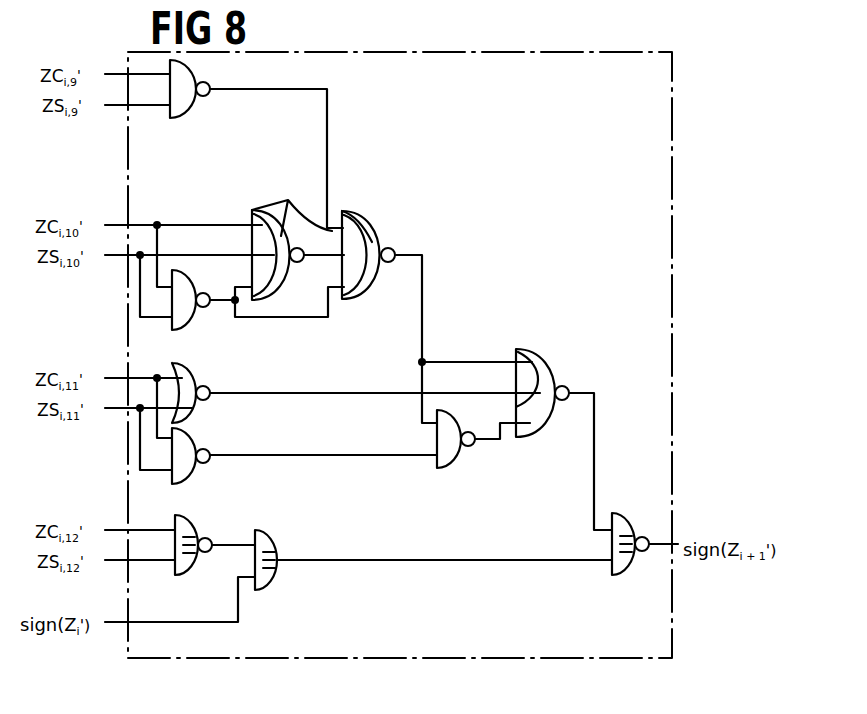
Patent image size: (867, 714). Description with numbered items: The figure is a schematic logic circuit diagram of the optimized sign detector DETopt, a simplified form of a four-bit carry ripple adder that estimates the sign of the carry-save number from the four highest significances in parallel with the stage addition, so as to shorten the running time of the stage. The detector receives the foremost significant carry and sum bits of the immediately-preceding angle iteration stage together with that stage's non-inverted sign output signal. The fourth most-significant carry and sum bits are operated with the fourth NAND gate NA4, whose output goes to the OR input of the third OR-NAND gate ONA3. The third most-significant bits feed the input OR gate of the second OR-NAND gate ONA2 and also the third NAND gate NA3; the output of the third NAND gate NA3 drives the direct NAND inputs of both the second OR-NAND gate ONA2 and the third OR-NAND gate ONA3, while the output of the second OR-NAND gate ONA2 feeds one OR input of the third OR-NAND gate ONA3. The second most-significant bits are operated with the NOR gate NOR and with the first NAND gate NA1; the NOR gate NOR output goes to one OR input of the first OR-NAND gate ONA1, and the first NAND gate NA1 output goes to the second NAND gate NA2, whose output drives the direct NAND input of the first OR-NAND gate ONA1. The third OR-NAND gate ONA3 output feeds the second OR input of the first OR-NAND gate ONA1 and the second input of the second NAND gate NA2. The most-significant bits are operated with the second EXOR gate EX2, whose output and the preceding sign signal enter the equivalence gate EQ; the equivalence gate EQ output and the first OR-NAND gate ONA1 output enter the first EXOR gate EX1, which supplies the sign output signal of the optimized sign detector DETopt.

The fourth NAND gate NA4 is at (189, 101).
The third NAND gate NA3 is at (188, 313).
The second OR-NAND gate ONA2 is at (252, 212).
The third OR-NAND gate ONA3 is at (346, 216).
The NOR gate NOR is at (195, 403).
The first NAND gate NA1 is at (191, 469).
The second NAND gate NA2 is at (452, 457).
The first OR-NAND gate ONA1 is at (497, 327).
The second EXCLUSIVE-OR gate EX2 is at (200, 511).
The equivalence gate EQ is at (282, 534).
The first EXCLUSIVE-OR gate EX1 is at (562, 595).
The optimized sign detector DETopt is at (463, 658).